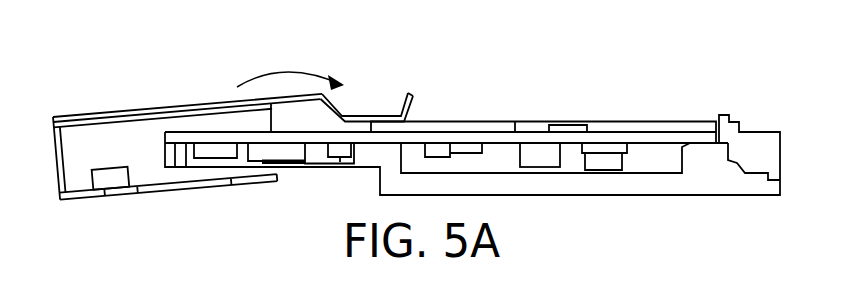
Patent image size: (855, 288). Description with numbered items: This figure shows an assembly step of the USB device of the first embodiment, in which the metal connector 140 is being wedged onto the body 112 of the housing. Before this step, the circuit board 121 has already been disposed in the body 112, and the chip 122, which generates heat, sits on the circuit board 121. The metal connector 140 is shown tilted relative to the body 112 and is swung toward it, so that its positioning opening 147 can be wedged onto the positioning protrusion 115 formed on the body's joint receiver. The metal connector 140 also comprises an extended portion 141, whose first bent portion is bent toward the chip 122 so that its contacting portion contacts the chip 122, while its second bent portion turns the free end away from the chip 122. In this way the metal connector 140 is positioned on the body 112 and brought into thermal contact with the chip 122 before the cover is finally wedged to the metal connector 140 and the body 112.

The metal connector 140 is at (79, 193).
The positioning opening 147 is at (110, 175).
The positioning protrusion 115 is at (216, 153).
The extended portion 141 is at (371, 115).
The chip 122 is at (463, 127).
The circuit board 121 is at (653, 138).
The body 112 is at (705, 183).